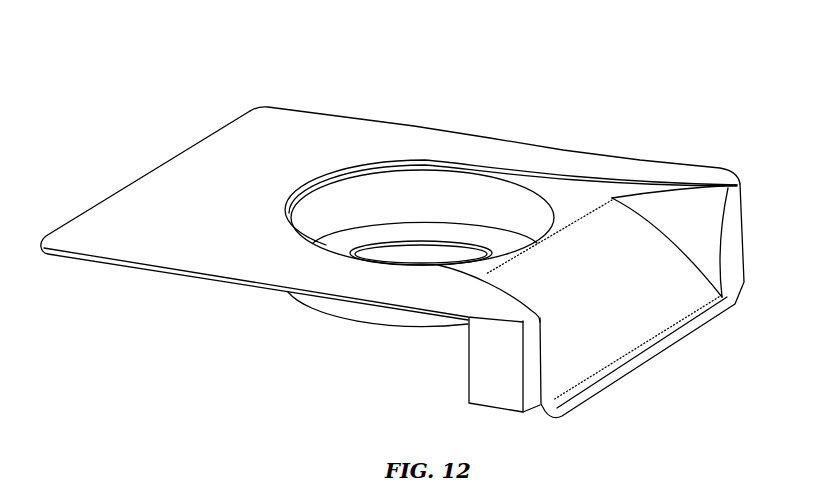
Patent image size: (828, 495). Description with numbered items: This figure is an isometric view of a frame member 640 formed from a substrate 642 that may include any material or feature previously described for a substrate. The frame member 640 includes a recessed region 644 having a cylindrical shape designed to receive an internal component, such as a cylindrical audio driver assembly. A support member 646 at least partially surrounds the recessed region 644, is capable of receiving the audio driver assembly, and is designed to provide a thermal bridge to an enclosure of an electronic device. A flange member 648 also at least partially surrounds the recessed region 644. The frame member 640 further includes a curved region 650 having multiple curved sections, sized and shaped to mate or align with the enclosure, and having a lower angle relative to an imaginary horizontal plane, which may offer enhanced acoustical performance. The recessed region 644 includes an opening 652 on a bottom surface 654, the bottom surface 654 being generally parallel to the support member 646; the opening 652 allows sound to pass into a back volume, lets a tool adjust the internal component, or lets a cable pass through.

The frame member 640 is at (652, 121).
The substrate 642 is at (411, 122).
The recessed region 644 is at (378, 155).
The support member 646 is at (293, 215).
The flange member 648 is at (98, 180).
The curved region 650 is at (686, 227).
The opening 652 is at (488, 246).
The bottom surface 654 is at (438, 230).